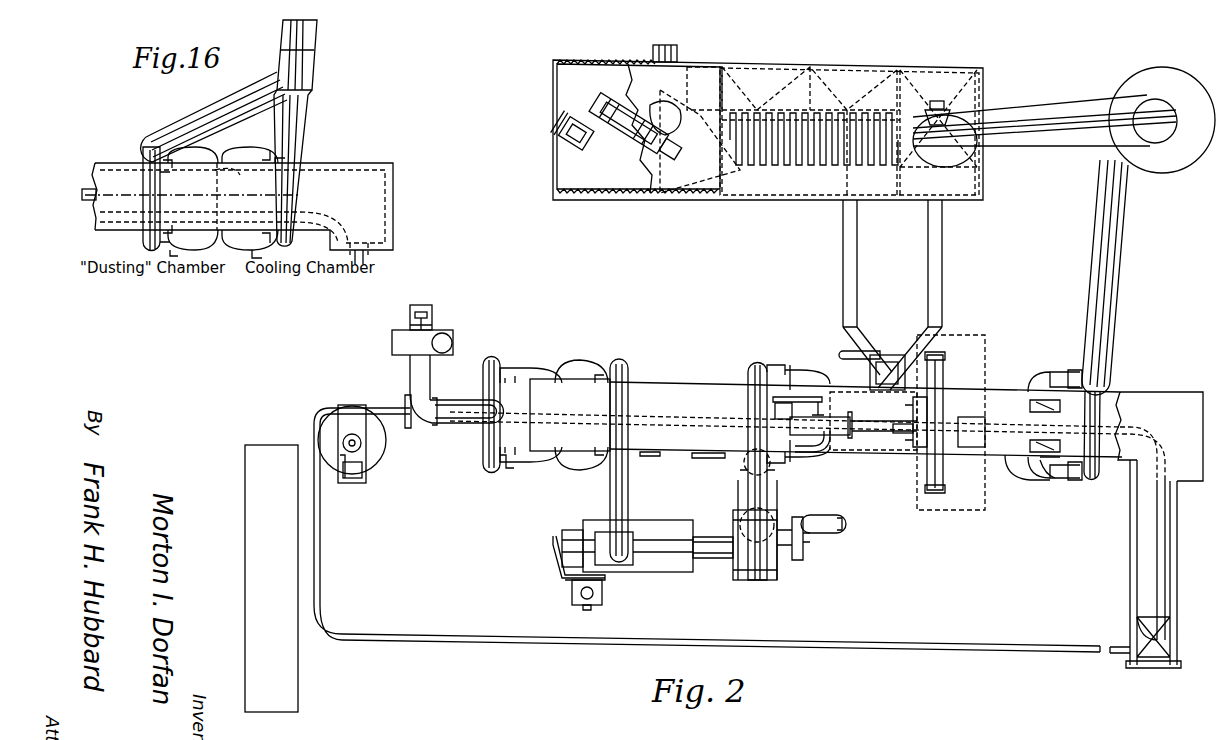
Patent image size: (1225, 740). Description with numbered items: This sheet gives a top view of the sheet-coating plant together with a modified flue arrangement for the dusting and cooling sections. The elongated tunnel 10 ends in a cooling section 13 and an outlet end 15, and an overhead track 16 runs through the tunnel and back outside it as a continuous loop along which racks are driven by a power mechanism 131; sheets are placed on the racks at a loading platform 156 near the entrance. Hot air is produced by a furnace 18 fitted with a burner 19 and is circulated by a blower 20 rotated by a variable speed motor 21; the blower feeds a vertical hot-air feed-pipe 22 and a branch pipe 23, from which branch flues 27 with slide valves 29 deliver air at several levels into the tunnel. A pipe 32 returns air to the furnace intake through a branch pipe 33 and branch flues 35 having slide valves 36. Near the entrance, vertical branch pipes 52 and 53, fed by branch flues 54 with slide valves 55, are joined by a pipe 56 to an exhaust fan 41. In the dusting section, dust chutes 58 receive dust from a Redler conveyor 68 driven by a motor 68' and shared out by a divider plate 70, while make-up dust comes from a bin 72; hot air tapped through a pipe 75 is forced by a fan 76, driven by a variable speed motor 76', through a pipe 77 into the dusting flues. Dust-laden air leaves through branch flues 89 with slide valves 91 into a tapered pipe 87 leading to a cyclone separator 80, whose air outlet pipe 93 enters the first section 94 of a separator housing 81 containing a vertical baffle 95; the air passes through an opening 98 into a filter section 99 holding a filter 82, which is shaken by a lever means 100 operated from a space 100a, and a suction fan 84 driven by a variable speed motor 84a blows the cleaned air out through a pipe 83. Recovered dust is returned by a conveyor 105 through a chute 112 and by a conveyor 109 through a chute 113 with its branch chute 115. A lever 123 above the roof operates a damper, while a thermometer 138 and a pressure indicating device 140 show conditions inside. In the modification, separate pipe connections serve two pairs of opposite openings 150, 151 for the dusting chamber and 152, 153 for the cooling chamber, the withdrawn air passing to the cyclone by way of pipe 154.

In FIG. 16, the cooling section 13 is at (331, 180).
In FIG. 16, the outlet end 15 is at (369, 263).
In FIG. 16, the pipe 154 is at (313, 52).
In FIG. 16, the opening 150 is at (212, 172).
In FIG. 16, the opening 151 is at (212, 224).
In FIG. 16, the opening 152 is at (227, 172).
In FIG. 16, the opening 153 is at (226, 226).
In FIG. 2, the tunnel 10 is at (680, 382).
In FIG. 2, the overhead track 16 is at (1165, 544).
In FIG. 2, the furnace 18 is at (657, 570).
In FIG. 2, the burner 19 is at (553, 565).
In FIG. 2, the blower 20 is at (773, 578).
In FIG. 2, the variable speed motor 21 is at (826, 536).
In FIG. 2, the vertical hot-air feed-pipe 22 is at (745, 495).
In FIG. 2, the branch pipe 23 is at (754, 366).
In FIG. 2, the branch flues 27 is at (791, 372).
In FIG. 2, the slide valve 29 is at (776, 364).
In FIG. 2, the pipe 32 is at (628, 506).
In FIG. 2, the branch pipe 33 is at (619, 362).
In FIG. 2, the branch flues 35 is at (584, 361).
In FIG. 2, the slide valve 36 is at (603, 365).
In FIG. 2, the exhaust fan 41 is at (392, 343).
In FIG. 2, the vertical branch pipe 52 is at (490, 359).
In FIG. 2, the vertical branch pipe 53 is at (484, 470).
In FIG. 2, the branch flues 54 is at (531, 370).
In FIG. 2, the slide valve 55 is at (508, 367).
In FIG. 2, the pipe 56 is at (410, 380).
In FIG. 2, the dust chute 58 is at (910, 432).
In FIG. 2, the Redler conveyor 68 is at (951, 422).
In FIG. 2, the motor 68' is at (986, 434).
In FIG. 2, the divider plate 70 is at (940, 409).
In FIG. 2, the bin 72 is at (943, 376).
In FIG. 2, the pipe 75 is at (826, 452).
In FIG. 2, the fan 76 is at (873, 421).
In FIG. 2, the variable speed motor 76' is at (768, 406).
In FIG. 2, the pipe 77 is at (860, 437).
In FIG. 2, the cyclone separator 80 is at (1162, 170).
In FIG. 2, the separator housing 81 is at (781, 198).
In FIG. 2, the filter 82 is at (822, 116).
In FIG. 2, the pipe 83 is at (653, 50).
In FIG. 2, the suction fan 84 is at (642, 168).
In FIG. 2, the variable speed motor 84a is at (592, 150).
In FIG. 2, the pipe 87 is at (1099, 479).
In FIG. 2, the branch flues 89 is at (1059, 372).
In FIG. 2, the slide valve 91 is at (1072, 369).
In FIG. 2, the air outlet pipe 93 is at (1048, 108).
In FIG. 2, the first section 94 is at (973, 72).
In FIG. 2, the vertical baffle 95 is at (975, 101).
In FIG. 2, the opening 98 is at (904, 90).
In FIG. 2, the filter section 99 is at (796, 68).
In FIG. 2, the lever means 100 is at (735, 92).
In FIG. 2, the space 100a is at (705, 78).
In FIG. 2, the conveyor 105 is at (943, 220).
In FIG. 2, the conveyor 109 is at (857, 240).
In FIG. 2, the chute 112 is at (913, 341).
In FIG. 2, the chute 113 is at (866, 335).
In FIG. 2, the branch chute 115 is at (845, 351).
In FIG. 2, the lever 123 is at (1040, 462).
In FIG. 2, the power mechanism 131 is at (382, 452).
In FIG. 2, the thermometer 138 is at (648, 457).
In FIG. 2, the pressure indicating device 140 is at (705, 458).
In FIG. 2, the loading platform 156 is at (300, 545).